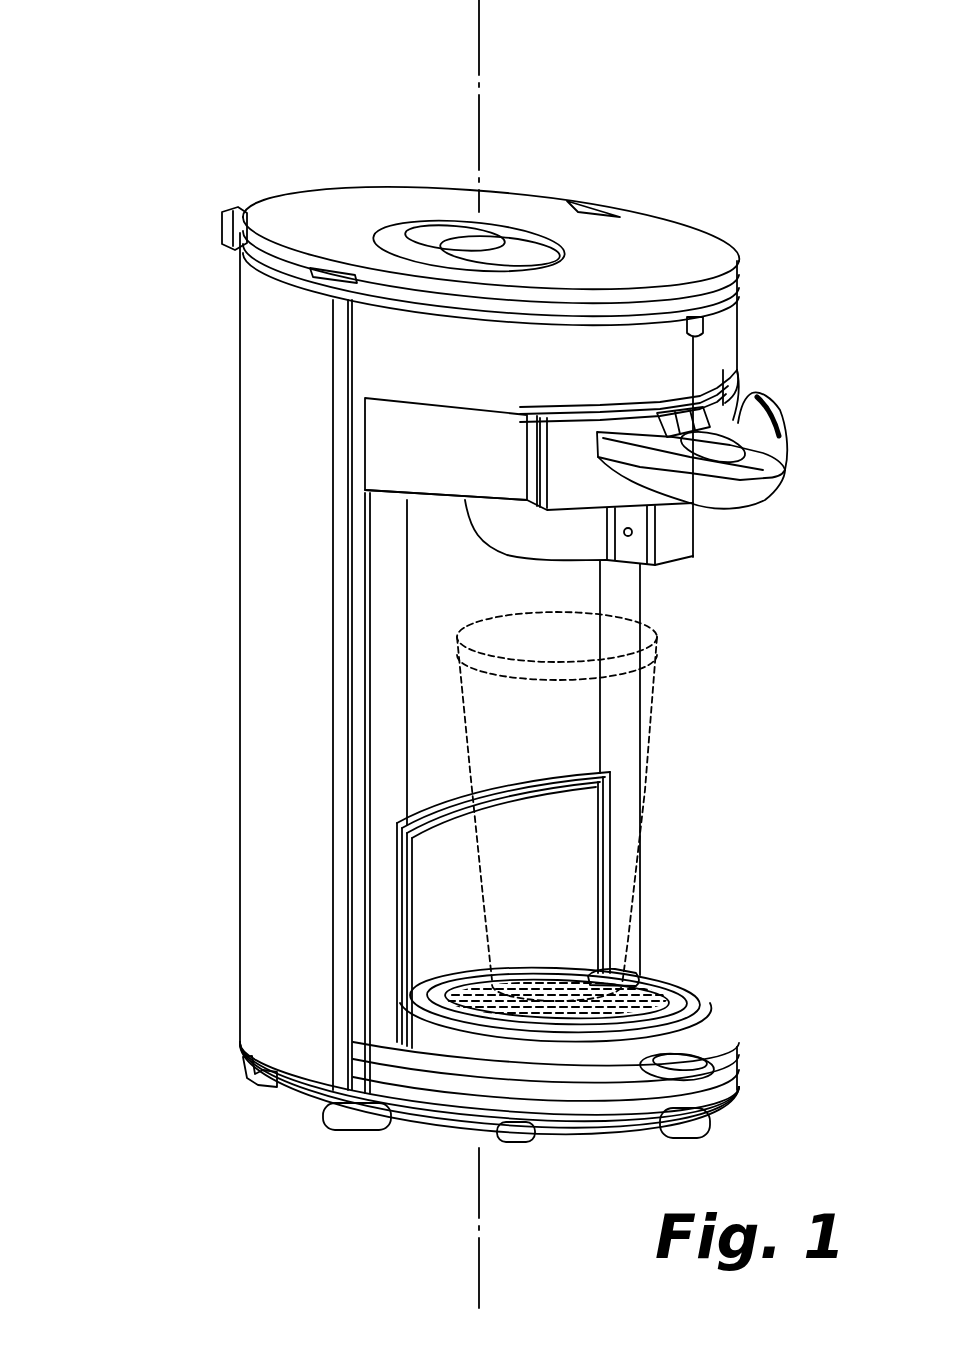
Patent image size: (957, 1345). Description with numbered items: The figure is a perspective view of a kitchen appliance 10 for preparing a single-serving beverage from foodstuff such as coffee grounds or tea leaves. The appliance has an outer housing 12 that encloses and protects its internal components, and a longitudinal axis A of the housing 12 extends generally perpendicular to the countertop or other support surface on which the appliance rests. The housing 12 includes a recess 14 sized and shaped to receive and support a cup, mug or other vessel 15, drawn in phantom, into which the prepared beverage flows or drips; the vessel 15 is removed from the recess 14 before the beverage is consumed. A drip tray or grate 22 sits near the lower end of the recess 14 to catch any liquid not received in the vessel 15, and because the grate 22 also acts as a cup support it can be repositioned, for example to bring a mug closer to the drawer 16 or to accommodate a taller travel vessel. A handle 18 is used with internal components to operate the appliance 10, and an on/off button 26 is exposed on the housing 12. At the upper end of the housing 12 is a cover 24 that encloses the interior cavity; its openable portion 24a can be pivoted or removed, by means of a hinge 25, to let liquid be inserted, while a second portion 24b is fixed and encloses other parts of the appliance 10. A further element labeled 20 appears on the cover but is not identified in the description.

The kitchen appliance 10 is at (160, 143).
The outer housing 12 is at (262, 553).
The recess 14 is at (672, 900).
The vessel 15 is at (650, 710).
The drawer 16 is at (733, 569).
The handle 18 is at (778, 436).
The lid opening / recess 20 is at (505, 232).
The drip tray or grate 22 is at (676, 1012).
The cover 24 is at (645, 190).
The openable portion of the cover 24a is at (362, 214).
The second portion of the cover 24b is at (680, 257).
The hinge 25 is at (230, 241).
The on/off button 26 is at (700, 1067).
The longitudinal axis A is at (483, 53).